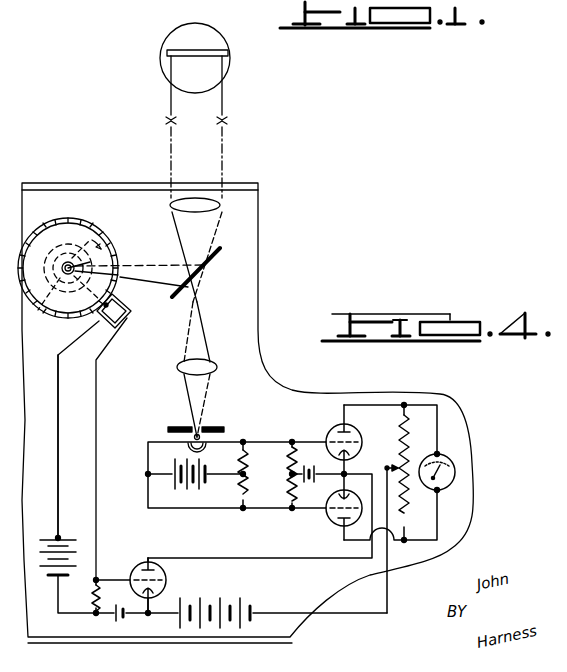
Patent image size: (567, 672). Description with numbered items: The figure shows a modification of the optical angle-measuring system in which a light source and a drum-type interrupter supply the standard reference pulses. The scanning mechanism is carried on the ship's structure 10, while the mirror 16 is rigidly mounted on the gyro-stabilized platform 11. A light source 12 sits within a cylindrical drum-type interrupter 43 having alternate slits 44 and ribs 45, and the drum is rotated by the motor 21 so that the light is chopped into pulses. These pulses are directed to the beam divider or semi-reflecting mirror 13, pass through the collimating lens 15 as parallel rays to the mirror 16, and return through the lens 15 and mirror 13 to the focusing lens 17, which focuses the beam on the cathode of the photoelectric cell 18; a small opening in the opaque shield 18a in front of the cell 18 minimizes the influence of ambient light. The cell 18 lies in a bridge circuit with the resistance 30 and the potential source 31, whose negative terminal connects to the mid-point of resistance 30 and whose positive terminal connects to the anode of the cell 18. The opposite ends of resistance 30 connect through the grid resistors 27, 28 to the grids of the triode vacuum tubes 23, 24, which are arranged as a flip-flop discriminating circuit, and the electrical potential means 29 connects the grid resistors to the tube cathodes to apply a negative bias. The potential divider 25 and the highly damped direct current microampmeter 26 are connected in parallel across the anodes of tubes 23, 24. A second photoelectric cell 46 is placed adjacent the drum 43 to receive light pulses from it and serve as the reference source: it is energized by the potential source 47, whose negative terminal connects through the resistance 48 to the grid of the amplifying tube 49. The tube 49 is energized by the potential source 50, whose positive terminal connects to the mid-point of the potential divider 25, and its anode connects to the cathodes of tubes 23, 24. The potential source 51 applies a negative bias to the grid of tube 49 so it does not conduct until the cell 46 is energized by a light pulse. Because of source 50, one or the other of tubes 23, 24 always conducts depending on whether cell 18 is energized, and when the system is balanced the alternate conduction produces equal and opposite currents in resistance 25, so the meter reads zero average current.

The ship's structure 10 is at (248, 345).
The gyro-stabilized platform 11 is at (216, 35).
The light source 12 is at (68, 260).
The semi-reflecting mirror 13 is at (212, 262).
The collimating lens 15 is at (205, 212).
The mirror 16 is at (222, 49).
The focusing lens 17 is at (210, 363).
The photoelectric cell 18 is at (210, 440).
The opaque shield 18a is at (170, 425).
The motor 21 is at (50, 322).
The triode vacuum tube 23 is at (358, 430).
The triode vacuum tube 24 is at (340, 522).
The potential divider 25 is at (400, 440).
The direct current microampmeter 26 is at (456, 472).
The grid resistor 27 is at (292, 450).
The grid resistor 28 is at (288, 500).
The electrical potential means 29 is at (310, 464).
The resistance 30 is at (250, 482).
The source of electric potential 31 is at (170, 490).
The cylindrical drum-type interrupter 43 is at (92, 216).
The slits 44 is at (103, 232).
The ribs 45 is at (118, 256).
The second photoelectric cell 46 is at (123, 293).
The potential source 47 is at (60, 536).
The resistance 48 is at (92, 600).
The amplifying tube 49 is at (164, 570).
The potential source 50 is at (252, 606).
The potential source 51 is at (126, 618).